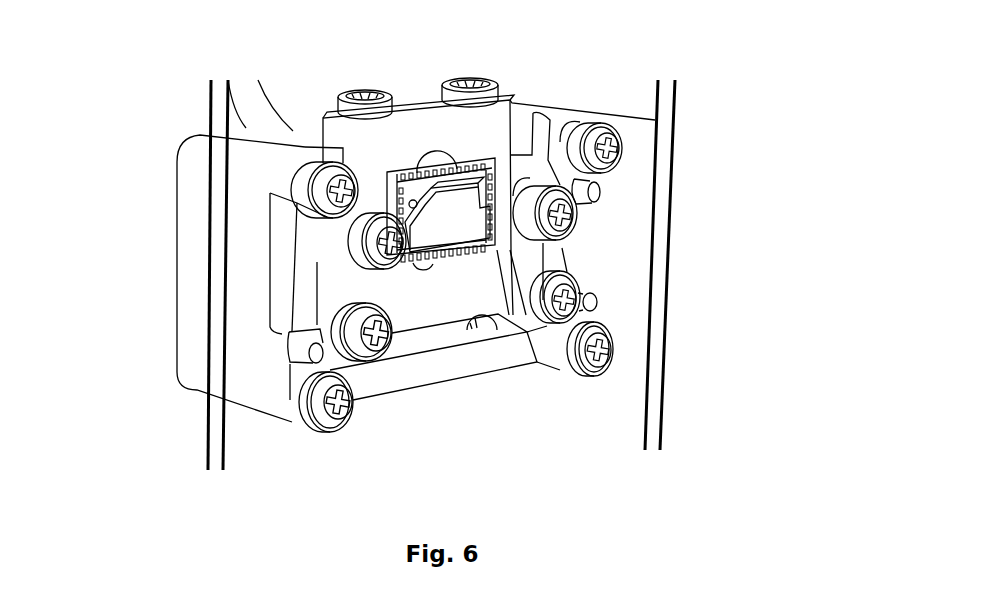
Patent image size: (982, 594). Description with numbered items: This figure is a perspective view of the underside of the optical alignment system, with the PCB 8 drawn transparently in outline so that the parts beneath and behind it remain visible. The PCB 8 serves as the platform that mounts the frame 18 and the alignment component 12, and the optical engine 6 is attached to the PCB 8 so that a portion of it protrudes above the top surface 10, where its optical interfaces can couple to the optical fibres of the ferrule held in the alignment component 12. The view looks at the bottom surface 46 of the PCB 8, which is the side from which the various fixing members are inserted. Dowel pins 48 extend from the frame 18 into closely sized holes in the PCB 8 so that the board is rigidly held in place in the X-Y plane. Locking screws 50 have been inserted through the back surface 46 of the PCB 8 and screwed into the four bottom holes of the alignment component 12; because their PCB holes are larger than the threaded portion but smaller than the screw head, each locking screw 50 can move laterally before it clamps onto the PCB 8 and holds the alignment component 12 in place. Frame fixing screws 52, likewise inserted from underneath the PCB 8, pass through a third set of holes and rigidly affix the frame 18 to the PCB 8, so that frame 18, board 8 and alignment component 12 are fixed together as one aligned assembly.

The optical engine 6 is at (432, 164).
The PCB 8 is at (654, 304).
The top surface 10 is at (206, 428).
The alignment component 12 is at (321, 118).
The frame 18 is at (175, 178).
The bottom surface 46 is at (221, 437).
The dowel pin 48 is at (302, 350).
The locking screw 50 is at (371, 237).
The frame fixing screw 52 is at (306, 184).